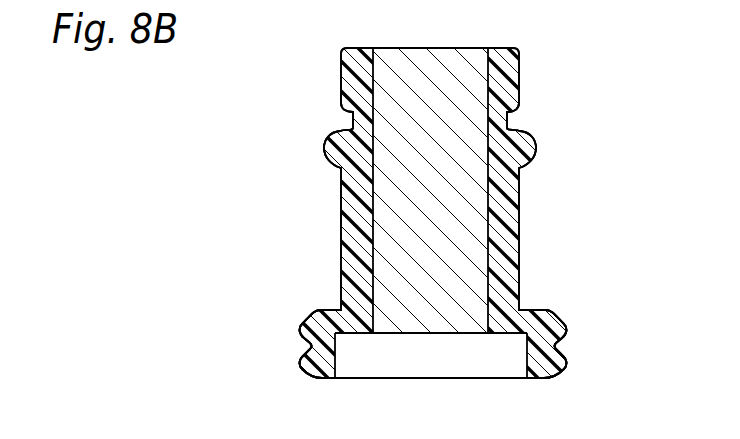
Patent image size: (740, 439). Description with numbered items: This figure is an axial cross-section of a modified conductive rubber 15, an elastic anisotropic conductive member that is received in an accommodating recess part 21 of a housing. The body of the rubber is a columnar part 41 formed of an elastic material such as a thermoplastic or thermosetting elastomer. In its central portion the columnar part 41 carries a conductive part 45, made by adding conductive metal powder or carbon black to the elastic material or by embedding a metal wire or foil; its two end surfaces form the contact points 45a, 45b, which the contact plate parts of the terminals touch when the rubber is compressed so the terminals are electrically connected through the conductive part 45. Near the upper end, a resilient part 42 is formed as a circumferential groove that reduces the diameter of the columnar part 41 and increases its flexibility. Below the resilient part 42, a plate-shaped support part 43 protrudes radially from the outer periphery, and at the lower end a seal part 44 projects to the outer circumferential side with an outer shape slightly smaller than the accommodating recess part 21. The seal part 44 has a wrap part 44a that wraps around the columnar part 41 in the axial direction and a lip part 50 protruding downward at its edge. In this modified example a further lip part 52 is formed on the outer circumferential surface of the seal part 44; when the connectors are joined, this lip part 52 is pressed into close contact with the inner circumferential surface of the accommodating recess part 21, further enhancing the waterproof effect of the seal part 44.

The sealing member 15 is at (578, 60).
The accommodating recess part 21 is at (559, 434).
The columnar part 41 is at (340, 208).
The resilient part 42 is at (350, 113).
The support part 43 is at (323, 147).
The seal part 44 is at (325, 309).
The wrap part 44a is at (318, 311).
The conductive part 45 is at (465, 222).
The contact point 45a is at (437, 333).
The contact point 45b is at (457, 48).
The lip part 50 is at (320, 380).
The lip part 52 is at (300, 358).